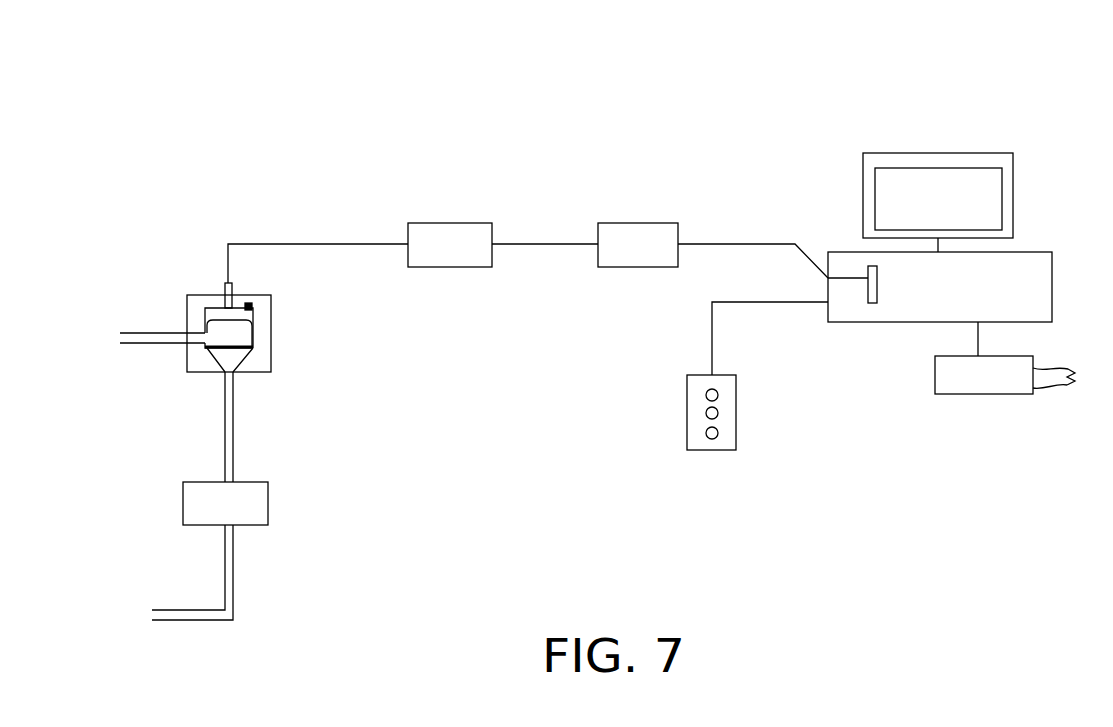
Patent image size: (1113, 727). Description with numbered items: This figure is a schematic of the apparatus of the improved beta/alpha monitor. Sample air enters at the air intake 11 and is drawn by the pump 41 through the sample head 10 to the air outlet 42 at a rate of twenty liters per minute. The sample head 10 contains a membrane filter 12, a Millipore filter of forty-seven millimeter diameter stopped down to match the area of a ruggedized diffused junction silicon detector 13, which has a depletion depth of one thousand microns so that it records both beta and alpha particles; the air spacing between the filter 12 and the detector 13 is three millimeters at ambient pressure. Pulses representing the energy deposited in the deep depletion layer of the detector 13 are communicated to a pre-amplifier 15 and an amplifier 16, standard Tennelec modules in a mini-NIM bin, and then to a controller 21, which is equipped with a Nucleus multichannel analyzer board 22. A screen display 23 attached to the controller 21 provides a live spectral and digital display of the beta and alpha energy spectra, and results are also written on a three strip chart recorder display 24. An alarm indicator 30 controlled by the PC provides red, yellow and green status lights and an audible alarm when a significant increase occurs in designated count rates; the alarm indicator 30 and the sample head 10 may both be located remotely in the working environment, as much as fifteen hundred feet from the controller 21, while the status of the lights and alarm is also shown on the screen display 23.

The sample head 10 is at (187, 312).
The air intake 11 is at (120, 337).
The membrane filter 12 is at (254, 345).
The silicon detector 13 is at (252, 313).
The pre-amplifier 15 is at (432, 223).
The amplifier 16 is at (625, 223).
The controller 21 is at (848, 252).
The multichannel analyzer board 22 is at (872, 303).
The screen display 23 is at (1002, 205).
The three strip chart recorder display 24 is at (993, 394).
The alarm indicator 30 is at (736, 430).
The pump 41 is at (268, 492).
The air outlet 42 is at (150, 613).